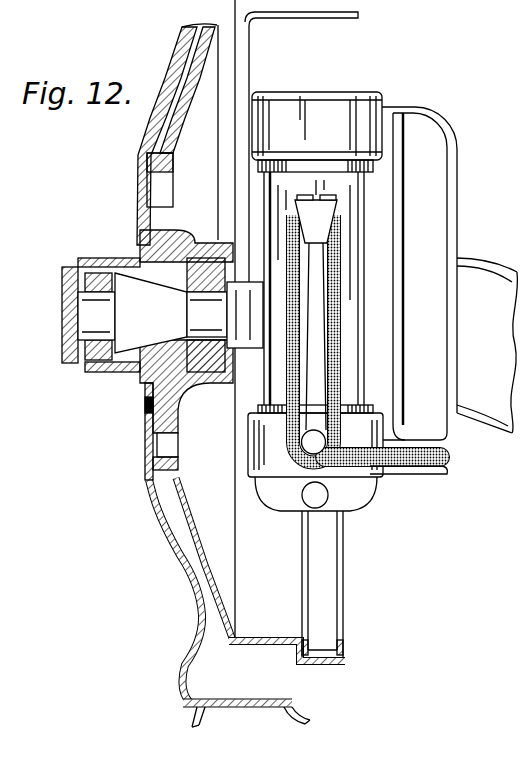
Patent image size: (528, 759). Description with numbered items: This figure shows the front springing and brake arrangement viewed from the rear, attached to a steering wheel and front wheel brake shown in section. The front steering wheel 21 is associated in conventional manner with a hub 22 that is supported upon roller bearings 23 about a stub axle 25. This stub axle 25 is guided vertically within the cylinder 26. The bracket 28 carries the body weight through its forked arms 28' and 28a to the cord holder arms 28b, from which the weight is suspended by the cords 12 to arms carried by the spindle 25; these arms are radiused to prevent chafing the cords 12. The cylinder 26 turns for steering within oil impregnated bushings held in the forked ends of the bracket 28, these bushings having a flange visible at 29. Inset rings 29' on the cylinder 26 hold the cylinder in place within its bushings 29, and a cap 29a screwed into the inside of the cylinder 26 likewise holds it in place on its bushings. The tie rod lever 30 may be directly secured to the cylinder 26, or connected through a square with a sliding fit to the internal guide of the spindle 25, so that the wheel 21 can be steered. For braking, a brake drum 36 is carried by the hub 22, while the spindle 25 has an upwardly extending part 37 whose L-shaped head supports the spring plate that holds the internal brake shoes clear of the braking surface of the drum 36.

The cords 12 is at (330, 343).
The front steering wheel 21 is at (180, 568).
The hub 22 is at (136, 383).
The roller bearings 23 is at (62, 297).
The stub axle 25 is at (122, 288).
The cylinder 26 is at (352, 210).
The bracket 28 is at (487, 332).
The forked arm 28' is at (419, 262).
The forked arm 28a is at (445, 440).
The cord holder arms 28b is at (318, 443).
The flange of bushing 29 is at (289, 287).
The inset rings 29' is at (304, 392).
The cap 29a is at (365, 96).
The tie rod lever 30 is at (326, 498).
The brake drum 36 is at (232, 640).
The upwardly extending part of spindle 37 is at (243, 80).